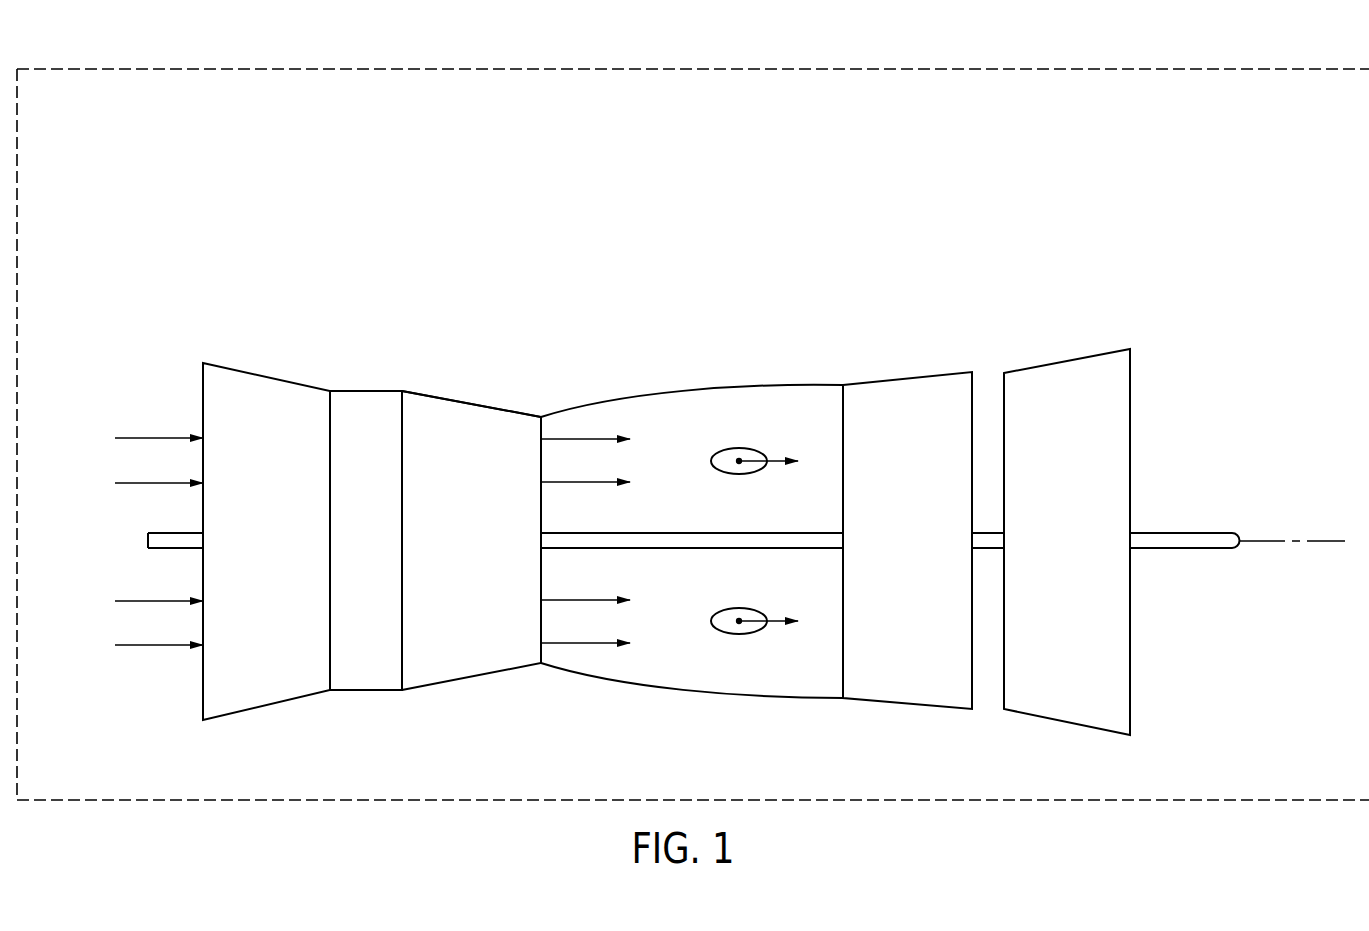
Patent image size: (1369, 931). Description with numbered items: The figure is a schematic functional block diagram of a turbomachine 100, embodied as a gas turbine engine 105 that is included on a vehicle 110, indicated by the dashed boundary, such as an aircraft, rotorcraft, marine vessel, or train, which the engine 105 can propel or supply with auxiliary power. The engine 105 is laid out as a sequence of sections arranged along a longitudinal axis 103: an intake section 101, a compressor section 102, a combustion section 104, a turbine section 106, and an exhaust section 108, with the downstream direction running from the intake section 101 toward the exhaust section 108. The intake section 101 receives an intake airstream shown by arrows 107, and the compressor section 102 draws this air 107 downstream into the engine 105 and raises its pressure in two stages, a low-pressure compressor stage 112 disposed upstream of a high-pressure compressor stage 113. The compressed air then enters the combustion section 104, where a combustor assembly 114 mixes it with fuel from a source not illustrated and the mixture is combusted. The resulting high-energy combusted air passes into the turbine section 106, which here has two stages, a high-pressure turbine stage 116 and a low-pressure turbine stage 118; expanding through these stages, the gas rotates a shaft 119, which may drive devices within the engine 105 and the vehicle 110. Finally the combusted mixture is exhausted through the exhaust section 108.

The turbomachine 100 is at (821, 180).
The intake section 101 is at (332, 258).
The compressor section 102 is at (332, 258).
The longitudinal axis 103 is at (1273, 540).
The combustion section 104 is at (541, 258).
The gas turbine engine 105 is at (474, 402).
The turbine section 106 is at (1130, 258).
The intake airstream 107 is at (115, 435).
The exhaust section 108 is at (1130, 258).
The vehicle 110 is at (422, 69).
The low-pressure compressor stage 112 is at (358, 672).
The high-pressure compressor stage 113 is at (450, 662).
The combustor assembly 114 is at (722, 448).
The high-pressure turbine stage 116 is at (903, 692).
The low-pressure turbine stage 118 is at (1065, 711).
The shaft 119 is at (1188, 532).